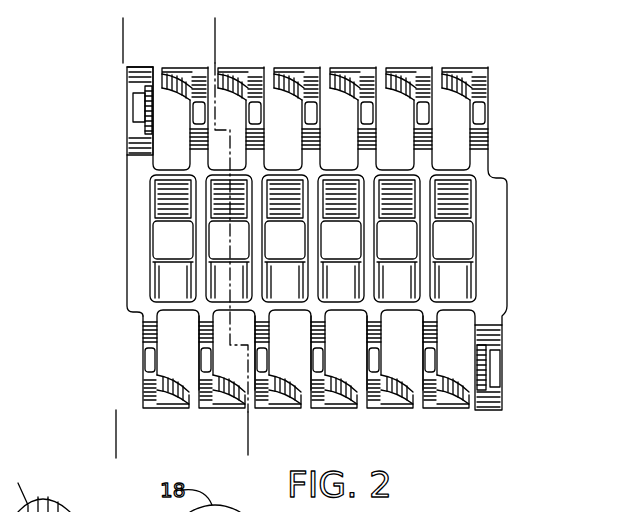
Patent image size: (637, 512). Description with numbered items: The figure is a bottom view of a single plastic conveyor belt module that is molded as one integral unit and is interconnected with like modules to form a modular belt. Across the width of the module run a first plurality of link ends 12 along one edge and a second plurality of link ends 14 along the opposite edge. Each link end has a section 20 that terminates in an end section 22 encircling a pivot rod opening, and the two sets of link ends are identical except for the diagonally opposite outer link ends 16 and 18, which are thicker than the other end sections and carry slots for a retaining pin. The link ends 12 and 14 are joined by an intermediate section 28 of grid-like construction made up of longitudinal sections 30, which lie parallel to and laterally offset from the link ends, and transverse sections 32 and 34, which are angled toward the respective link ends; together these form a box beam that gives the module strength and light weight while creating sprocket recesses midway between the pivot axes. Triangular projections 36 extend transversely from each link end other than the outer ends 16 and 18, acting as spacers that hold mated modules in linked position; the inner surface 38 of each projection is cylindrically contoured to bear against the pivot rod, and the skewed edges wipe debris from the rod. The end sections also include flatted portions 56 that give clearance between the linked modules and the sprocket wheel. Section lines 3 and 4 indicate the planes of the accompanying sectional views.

The section line 3- 3 is at (245, 33).
The section line 4- 4 is at (150, 33).
The first plurality of link ends 12 is at (434, 422).
The second plurality of link ends 14 is at (392, 57).
The outer link end 16 is at (492, 410).
The outer link end 18 is at (127, 88).
The section 20 is at (127, 157).
The end section 22 is at (143, 382).
The intermediate section 28 is at (140, 222).
The longitudinal sections 30 is at (482, 243).
The transverse sections 32 is at (178, 310).
The transverse sections 34 is at (168, 170).
The triangular projections 36 is at (398, 410).
The inner surface 38 is at (285, 92).
The flatted portions 56 is at (486, 112).